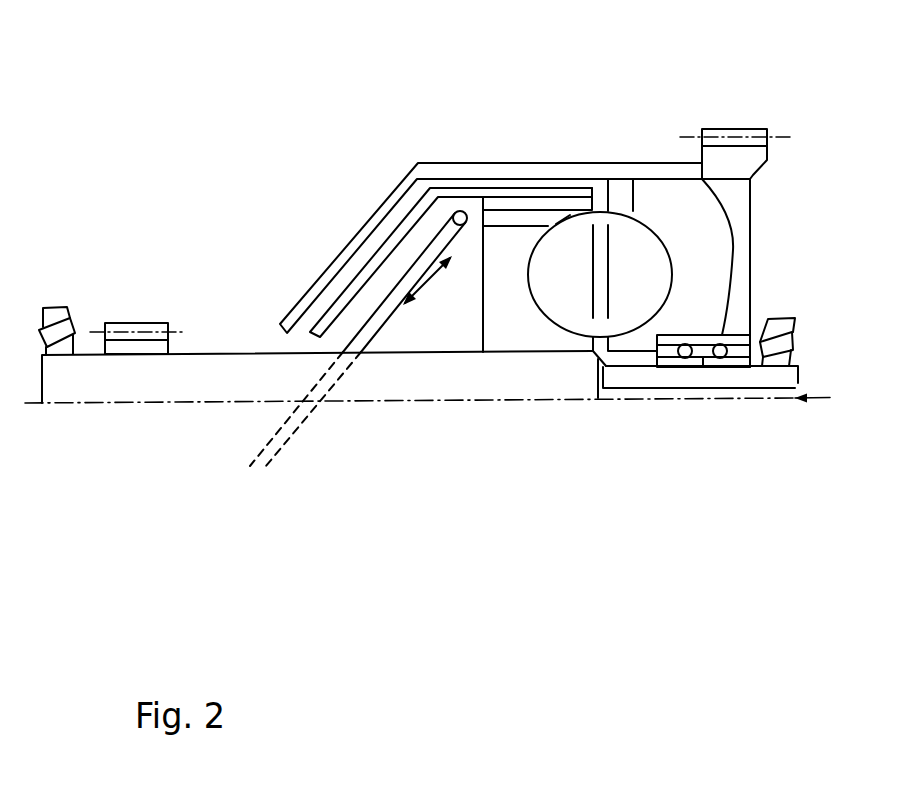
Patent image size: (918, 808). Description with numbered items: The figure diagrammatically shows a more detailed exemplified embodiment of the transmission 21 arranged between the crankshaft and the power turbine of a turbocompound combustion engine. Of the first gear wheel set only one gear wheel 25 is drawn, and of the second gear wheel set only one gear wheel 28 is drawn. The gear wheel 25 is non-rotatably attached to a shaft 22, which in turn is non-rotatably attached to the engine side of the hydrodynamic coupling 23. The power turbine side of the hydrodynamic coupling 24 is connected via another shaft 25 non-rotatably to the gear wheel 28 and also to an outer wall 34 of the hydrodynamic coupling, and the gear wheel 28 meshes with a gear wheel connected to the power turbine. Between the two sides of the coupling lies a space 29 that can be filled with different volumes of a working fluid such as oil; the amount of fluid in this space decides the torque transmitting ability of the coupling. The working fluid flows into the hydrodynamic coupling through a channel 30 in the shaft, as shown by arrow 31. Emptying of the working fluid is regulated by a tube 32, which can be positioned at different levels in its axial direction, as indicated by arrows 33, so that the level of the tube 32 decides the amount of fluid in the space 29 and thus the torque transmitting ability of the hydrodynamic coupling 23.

The transmission 21 is at (160, 99).
The shaft 22 is at (243, 354).
The hydrodynamic coupling 23 is at (573, 285).
The power turbine side of the hydrodynamic coupling 24 is at (625, 163).
The gear wheel 25 is at (133, 323).
The gear wheel 28 is at (722, 129).
The space 29 is at (617, 282).
The channel 30 is at (715, 391).
The arrow 31 is at (817, 398).
The tube 32 is at (278, 447).
The arrows 33 is at (430, 287).
The outer wall of the hydrodynamic coupling 34 is at (423, 162).